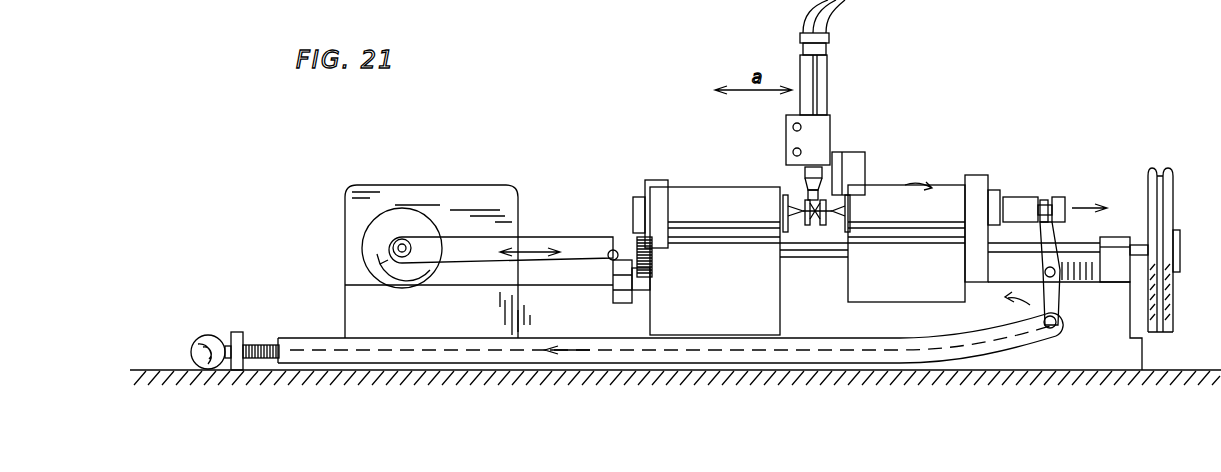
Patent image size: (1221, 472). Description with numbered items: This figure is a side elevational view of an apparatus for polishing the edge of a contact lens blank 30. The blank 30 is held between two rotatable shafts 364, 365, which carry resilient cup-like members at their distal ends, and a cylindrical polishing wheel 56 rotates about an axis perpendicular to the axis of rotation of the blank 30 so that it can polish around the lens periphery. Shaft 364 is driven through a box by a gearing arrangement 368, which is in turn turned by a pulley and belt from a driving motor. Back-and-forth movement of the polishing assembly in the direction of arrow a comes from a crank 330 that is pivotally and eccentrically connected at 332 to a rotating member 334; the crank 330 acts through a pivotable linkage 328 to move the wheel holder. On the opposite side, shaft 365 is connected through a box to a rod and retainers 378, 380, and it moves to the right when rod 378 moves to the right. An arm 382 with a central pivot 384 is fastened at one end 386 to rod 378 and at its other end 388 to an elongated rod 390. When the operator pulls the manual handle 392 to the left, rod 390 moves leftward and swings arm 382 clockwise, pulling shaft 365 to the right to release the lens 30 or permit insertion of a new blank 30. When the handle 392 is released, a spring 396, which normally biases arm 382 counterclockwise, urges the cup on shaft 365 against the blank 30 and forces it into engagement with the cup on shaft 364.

The contact lens blank 30 is at (815, 225).
The cylindrical polishing wheel 56 is at (805, 205).
The pivotable linkage 328 is at (636, 250).
The crank 330 is at (590, 248).
The eccentric pivotal connection 332 is at (402, 244).
The rotating member 334 is at (440, 232).
The rotatable shaft 364 is at (798, 232).
The rotatable shaft 365 is at (826, 206).
The gearing arrangement 368 is at (648, 250).
The rod 378 is at (1044, 205).
The retainer 380 is at (1066, 203).
The arm 382 is at (1052, 242).
The central pivot 384 is at (1055, 275).
The arm end 386 is at (1050, 200).
The arm end 388 is at (1052, 328).
The elongated rod 390 is at (797, 348).
The manual handle 392 is at (205, 350).
The spring 396 is at (260, 345).